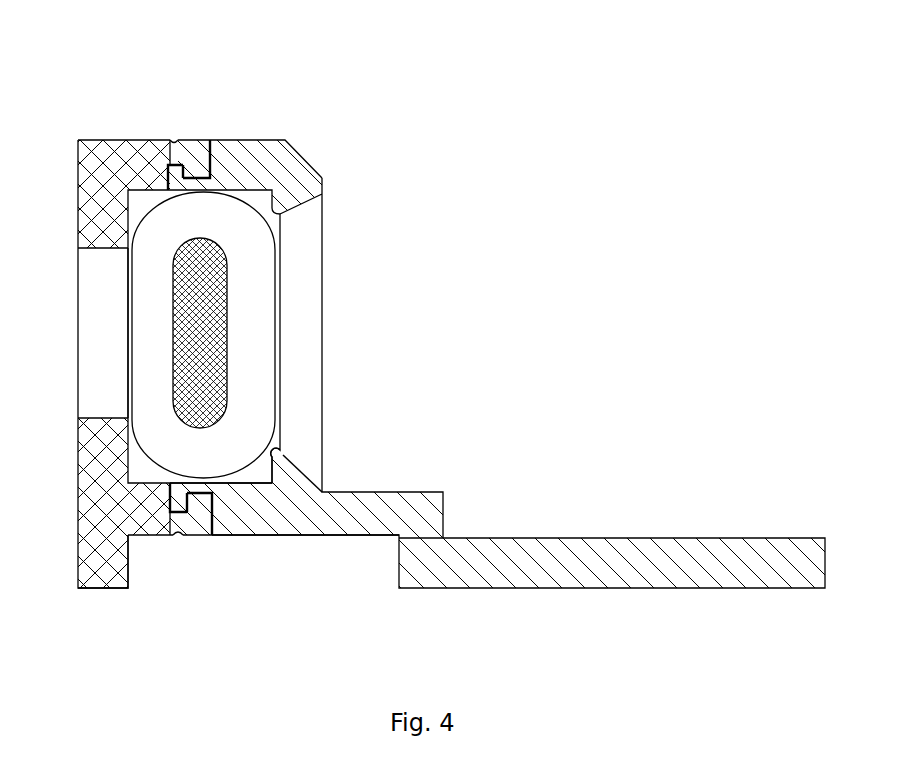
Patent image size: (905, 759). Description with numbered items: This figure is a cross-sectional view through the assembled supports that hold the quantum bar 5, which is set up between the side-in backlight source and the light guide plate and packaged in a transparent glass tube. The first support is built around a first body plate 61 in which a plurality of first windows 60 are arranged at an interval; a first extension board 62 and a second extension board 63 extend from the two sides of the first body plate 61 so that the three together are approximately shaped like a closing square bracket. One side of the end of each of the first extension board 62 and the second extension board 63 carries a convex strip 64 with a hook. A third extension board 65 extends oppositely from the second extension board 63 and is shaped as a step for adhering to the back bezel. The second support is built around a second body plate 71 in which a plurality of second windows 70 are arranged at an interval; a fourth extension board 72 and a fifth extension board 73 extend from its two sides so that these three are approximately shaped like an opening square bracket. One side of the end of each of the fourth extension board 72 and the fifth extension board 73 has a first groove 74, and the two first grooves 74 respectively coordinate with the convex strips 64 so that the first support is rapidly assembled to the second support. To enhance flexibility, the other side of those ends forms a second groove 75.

The quantum bar 5 is at (207, 380).
The first window 60 is at (293, 392).
The first body plate 61 is at (290, 467).
The first extension board 62 is at (240, 168).
The second extension board 63 is at (238, 507).
The convex strip 64 is at (193, 168).
The third extension board 65 is at (417, 527).
The second window 70 is at (98, 295).
The second body plate 71 is at (95, 458).
The fourth extension board 72 is at (142, 163).
The fifth extension board 73 is at (157, 528).
The first groove 74 is at (168, 165).
The second groove 75 is at (176, 142).